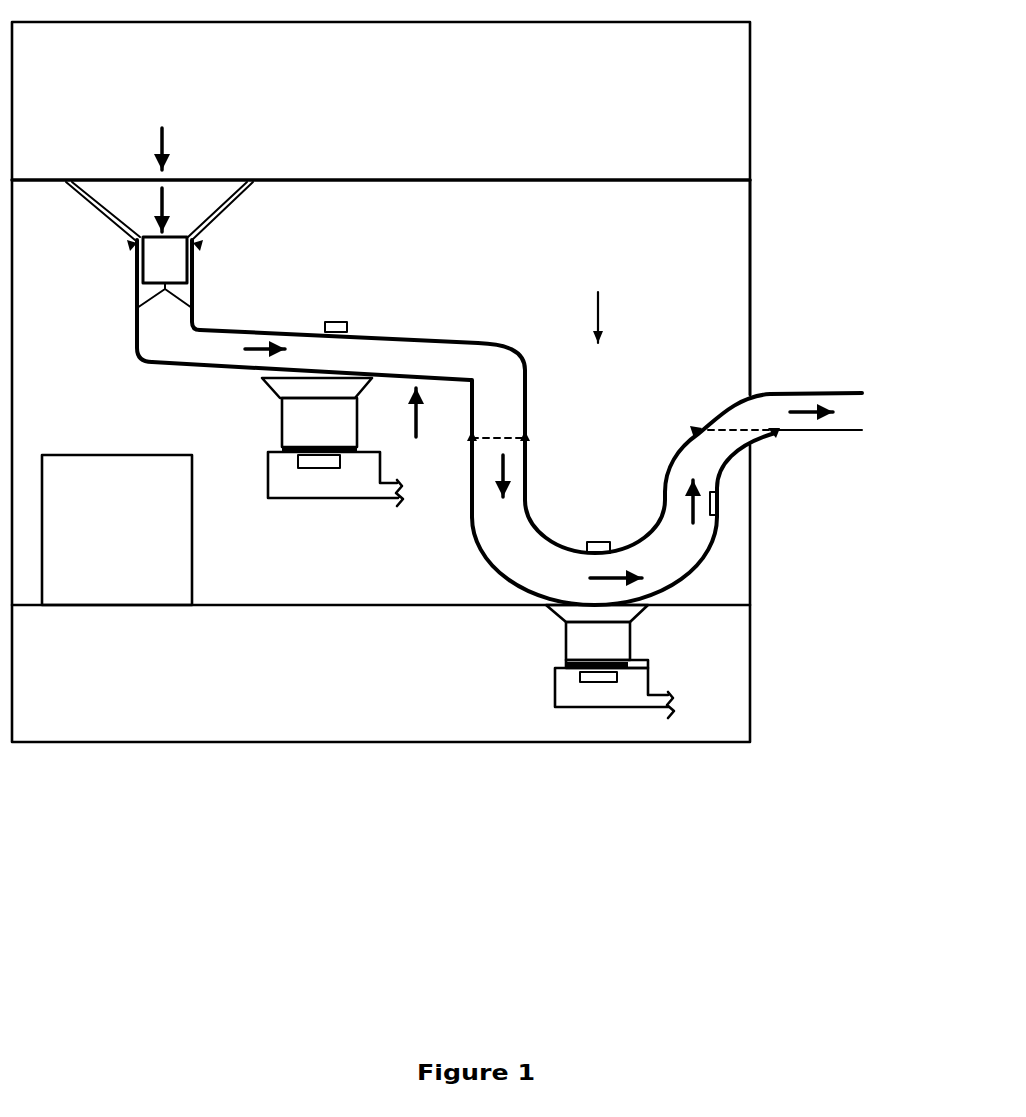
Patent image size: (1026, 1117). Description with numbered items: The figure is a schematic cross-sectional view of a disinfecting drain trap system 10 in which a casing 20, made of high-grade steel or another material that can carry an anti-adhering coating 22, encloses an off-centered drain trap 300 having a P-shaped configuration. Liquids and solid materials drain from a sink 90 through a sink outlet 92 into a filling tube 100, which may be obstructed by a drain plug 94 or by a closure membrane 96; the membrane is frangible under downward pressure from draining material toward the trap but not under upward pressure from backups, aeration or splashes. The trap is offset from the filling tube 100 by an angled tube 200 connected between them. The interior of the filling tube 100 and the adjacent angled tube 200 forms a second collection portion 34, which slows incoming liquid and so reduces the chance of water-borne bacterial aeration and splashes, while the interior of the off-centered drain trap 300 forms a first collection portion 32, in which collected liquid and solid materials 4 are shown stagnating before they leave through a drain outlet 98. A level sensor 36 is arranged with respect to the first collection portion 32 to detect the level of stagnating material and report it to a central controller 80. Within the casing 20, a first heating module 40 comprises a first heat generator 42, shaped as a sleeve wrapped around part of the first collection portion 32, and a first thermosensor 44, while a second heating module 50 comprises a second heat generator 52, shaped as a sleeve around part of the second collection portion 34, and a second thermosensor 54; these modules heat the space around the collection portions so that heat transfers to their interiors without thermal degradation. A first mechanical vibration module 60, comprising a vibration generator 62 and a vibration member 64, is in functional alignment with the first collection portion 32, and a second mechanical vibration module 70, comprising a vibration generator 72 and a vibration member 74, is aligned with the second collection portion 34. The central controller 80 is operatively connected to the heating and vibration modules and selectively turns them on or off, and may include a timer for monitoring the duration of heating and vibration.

The disinfecting drain trap system 10 is at (830, 173).
The casing 20 is at (768, 290).
The anti-adhering coating 22 is at (752, 345).
The sink 90 is at (768, 113).
The sink outlet 92 is at (156, 167).
The drain plug 94 is at (200, 206).
The closure membrane 96 is at (190, 288).
The filling tube 100 is at (126, 300).
The second heating module 50 is at (362, 338).
The second heat generator 52 is at (190, 366).
The second thermosensor 54 is at (323, 325).
The second collection portion 34 is at (352, 367).
The off-centered drain trap 300 is at (598, 303).
The angled tube 200 is at (417, 423).
The second mechanical vibration module 70 is at (270, 440).
The second vibration generator 72 is at (320, 459).
The second vibration member 74 is at (290, 433).
The central controller 80 is at (55, 445).
The first heat generator 42 is at (505, 583).
The first heating module 40 is at (618, 548).
The first thermosensor 44 is at (588, 544).
The first collection portion 32 is at (568, 593).
The liquid and solid materials 4 is at (683, 468).
The level sensor 36 is at (722, 500).
The drain outlet 98 is at (845, 410).
The first mechanical vibration module 60 is at (548, 658).
The first vibration generator 62 is at (600, 676).
The first vibration member 64 is at (575, 640).